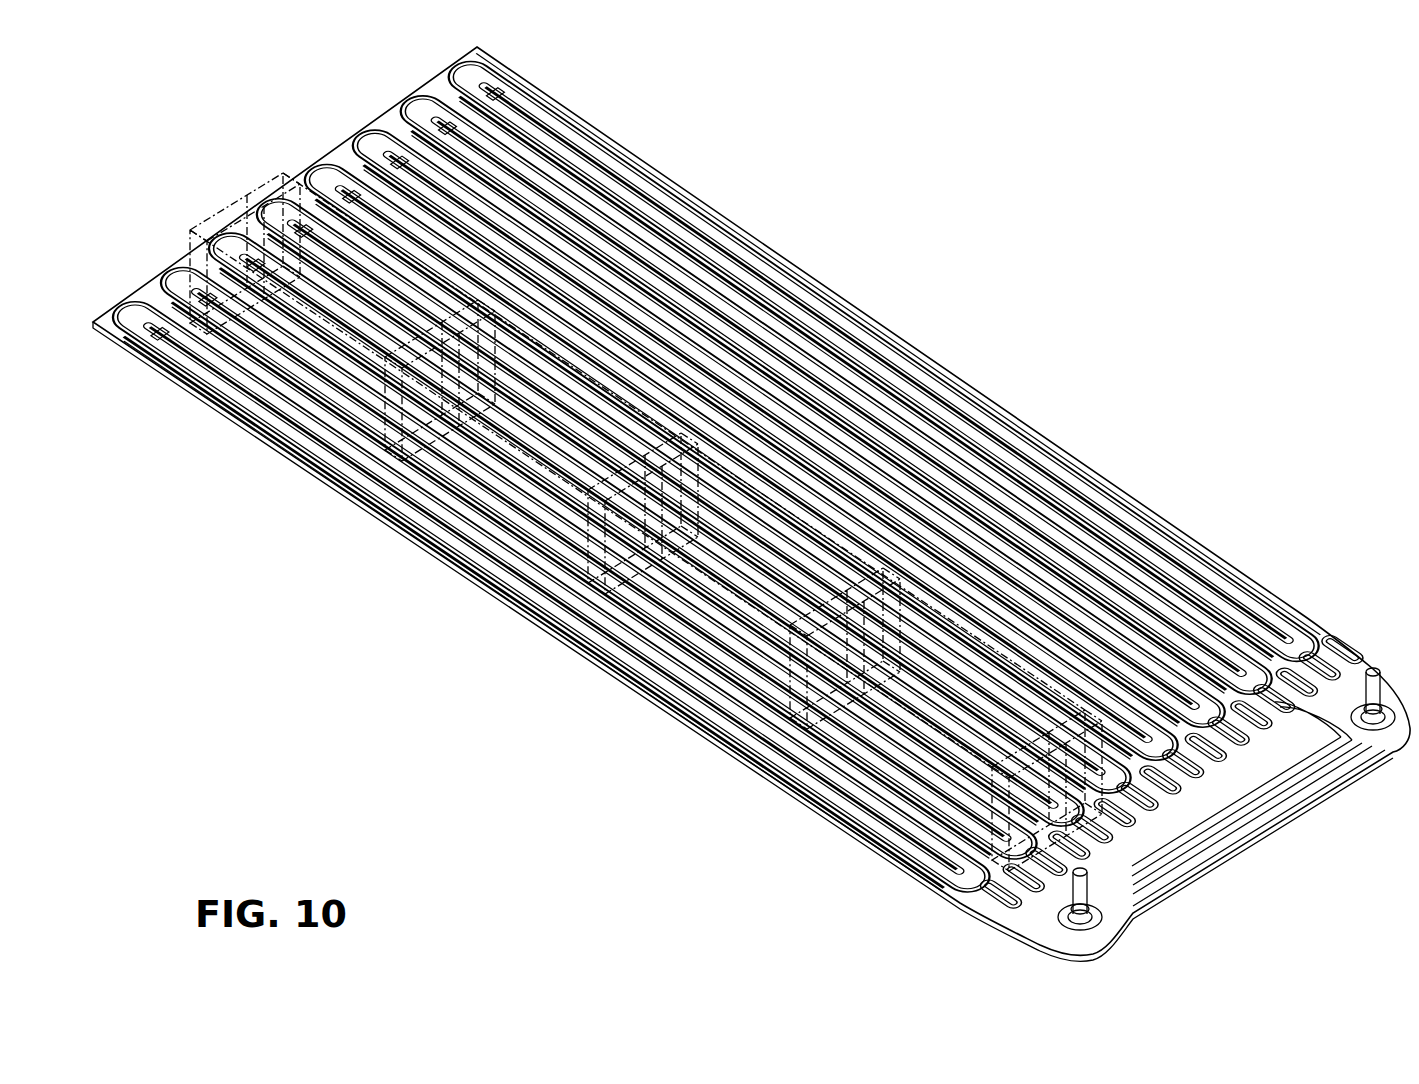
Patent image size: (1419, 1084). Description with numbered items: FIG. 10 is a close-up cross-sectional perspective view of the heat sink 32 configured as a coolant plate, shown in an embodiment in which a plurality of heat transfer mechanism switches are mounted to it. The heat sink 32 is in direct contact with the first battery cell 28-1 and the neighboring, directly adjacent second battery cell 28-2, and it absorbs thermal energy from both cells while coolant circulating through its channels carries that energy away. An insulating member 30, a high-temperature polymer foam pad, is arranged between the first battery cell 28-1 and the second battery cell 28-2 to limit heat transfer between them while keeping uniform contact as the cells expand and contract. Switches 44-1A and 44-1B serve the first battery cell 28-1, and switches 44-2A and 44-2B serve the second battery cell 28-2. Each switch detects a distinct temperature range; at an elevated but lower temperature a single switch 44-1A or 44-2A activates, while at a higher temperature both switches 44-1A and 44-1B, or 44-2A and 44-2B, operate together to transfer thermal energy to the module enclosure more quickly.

The first battery cell 28-1 is at (207, 220).
The second battery cell 28-2 is at (268, 178).
The insulating member 30 is at (227, 200).
The heat sink 32 is at (648, 703).
The switch 44-1A is at (1037, 838).
The switch 44-1B is at (905, 790).
The switch 44-2A is at (955, 805).
The switch 44-2B is at (905, 787).